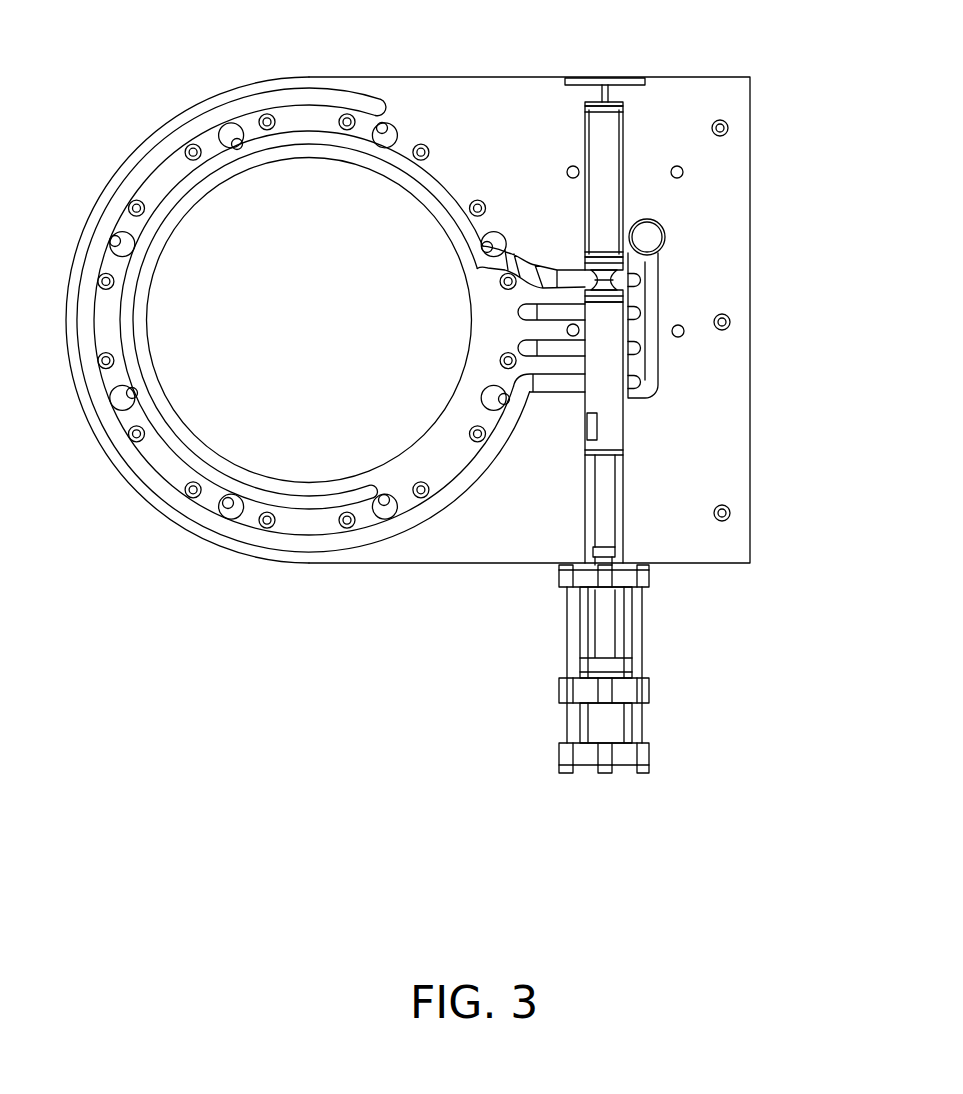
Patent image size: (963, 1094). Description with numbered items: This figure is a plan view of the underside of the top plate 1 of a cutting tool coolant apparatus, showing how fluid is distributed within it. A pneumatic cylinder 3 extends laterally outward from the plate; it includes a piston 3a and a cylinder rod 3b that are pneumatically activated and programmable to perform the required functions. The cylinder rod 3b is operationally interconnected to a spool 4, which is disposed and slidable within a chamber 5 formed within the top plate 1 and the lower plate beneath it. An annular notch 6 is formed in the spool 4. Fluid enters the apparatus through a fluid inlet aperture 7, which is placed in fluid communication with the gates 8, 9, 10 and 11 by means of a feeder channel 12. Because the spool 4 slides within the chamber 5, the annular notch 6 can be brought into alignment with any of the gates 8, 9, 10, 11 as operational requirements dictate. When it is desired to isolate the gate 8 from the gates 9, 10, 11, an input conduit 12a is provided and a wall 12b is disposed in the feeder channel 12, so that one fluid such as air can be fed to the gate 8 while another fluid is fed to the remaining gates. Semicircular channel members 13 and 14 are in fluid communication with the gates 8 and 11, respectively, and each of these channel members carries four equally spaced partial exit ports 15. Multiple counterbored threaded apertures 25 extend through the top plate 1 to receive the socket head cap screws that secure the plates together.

The top plate 1 is at (688, 482).
The pneumatic cylinder 3 is at (608, 725).
The piston 3a is at (608, 667).
The cylinder rod 3b is at (607, 517).
The spool 4 is at (612, 185).
The chamber 5 is at (623, 500).
The annular notch 6 is at (634, 271).
The fluid inlet aperture 7 is at (648, 238).
The gate 8 is at (640, 397).
The gate 9 is at (640, 349).
The gate 10 is at (640, 313).
The gate 11 is at (603, 279).
The feeder channel 12 is at (645, 266).
The input conduit 12a is at (648, 370).
The wall 12b is at (645, 388).
The semicircular channel member 13 is at (296, 548).
The semicircular channel member 14 is at (400, 165).
The partial exit ports 15 is at (237, 130).
The counterbored threaded apertures 25 is at (138, 207).